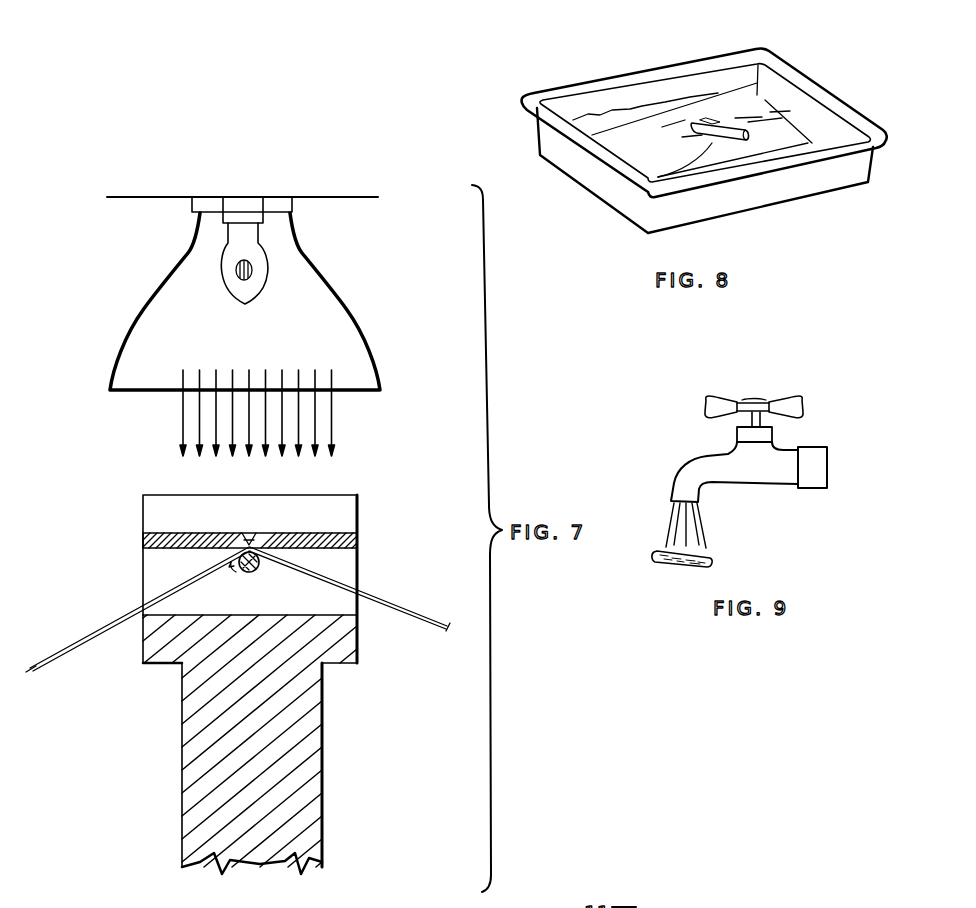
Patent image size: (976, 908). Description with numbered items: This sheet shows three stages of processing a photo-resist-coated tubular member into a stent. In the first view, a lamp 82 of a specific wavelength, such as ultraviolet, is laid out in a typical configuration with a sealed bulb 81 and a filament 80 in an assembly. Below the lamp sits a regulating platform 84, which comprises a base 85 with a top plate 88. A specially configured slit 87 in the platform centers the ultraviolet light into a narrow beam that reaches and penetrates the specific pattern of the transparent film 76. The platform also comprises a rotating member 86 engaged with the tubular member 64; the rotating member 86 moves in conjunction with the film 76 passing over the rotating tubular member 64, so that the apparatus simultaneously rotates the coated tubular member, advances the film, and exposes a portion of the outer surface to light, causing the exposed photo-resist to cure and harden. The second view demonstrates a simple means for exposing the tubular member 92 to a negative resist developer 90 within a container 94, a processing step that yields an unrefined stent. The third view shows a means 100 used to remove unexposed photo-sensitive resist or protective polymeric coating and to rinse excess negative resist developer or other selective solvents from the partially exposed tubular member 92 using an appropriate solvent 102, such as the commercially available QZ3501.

In FIG. 7, the filament 80 is at (236, 270).
In FIG. 7, the sealed bulb 81 is at (265, 262).
In FIG. 7, the lamp 82 is at (336, 324).
In FIG. 7, the regulating platform 84 is at (343, 511).
In FIG. 7, the base 85 is at (343, 561).
In FIG. 7, the rotating member 86 is at (246, 573).
In FIG. 7, the slit 87 is at (248, 533).
In FIG. 7, the top plate 88 is at (164, 533).
In FIG. 7, the tubular member 64 is at (262, 574).
In FIG. 7, the transparent film 76 is at (104, 630).
In FIG. 8, the negative resist developer 90 is at (641, 124).
In FIG. 8, the tubular member 92 is at (735, 130).
In FIG. 9, the tubular member 92 is at (678, 567).
In FIG. 8, the container 94 is at (815, 88).
In FIG. 9, the means 100 is at (766, 400).
In FIG. 9, the solvent 102 is at (700, 522).